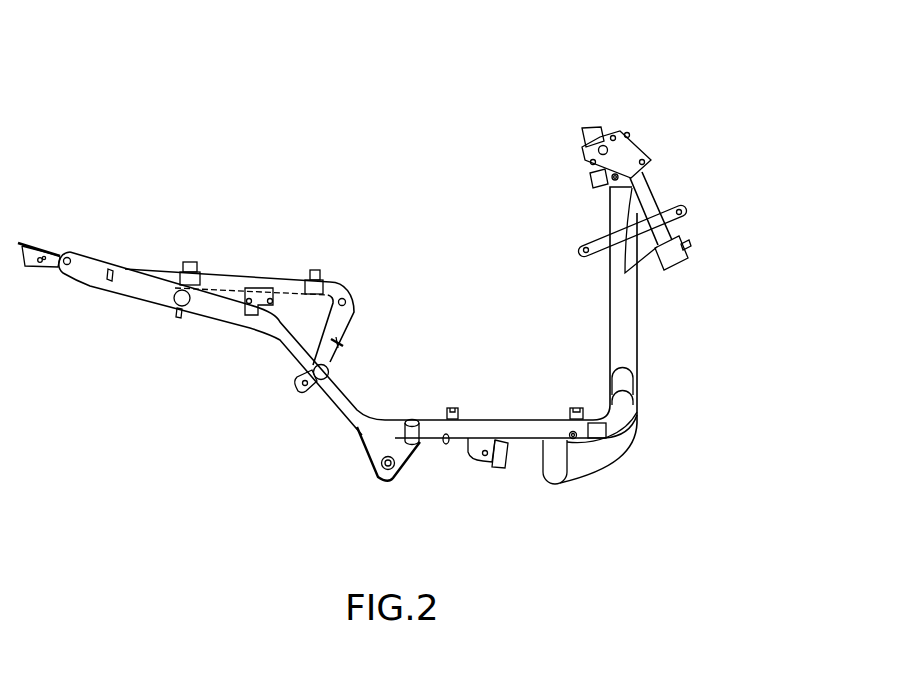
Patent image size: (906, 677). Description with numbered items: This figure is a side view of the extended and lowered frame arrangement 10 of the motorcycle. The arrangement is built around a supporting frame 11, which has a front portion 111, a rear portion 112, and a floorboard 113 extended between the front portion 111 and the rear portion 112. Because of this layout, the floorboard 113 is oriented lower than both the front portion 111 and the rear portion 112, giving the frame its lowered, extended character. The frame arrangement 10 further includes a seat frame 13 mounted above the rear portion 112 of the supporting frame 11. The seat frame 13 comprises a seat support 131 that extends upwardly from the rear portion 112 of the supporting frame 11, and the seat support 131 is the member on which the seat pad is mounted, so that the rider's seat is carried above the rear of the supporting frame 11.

The extended and lowered frame arrangement 10 is at (676, 176).
The supporting frame 11 is at (753, 291).
The front portion 111 is at (622, 343).
The rear portion 112 is at (140, 293).
The floorboard 113 is at (483, 427).
The seat frame 13 is at (300, 208).
The seat support 131 is at (227, 280).